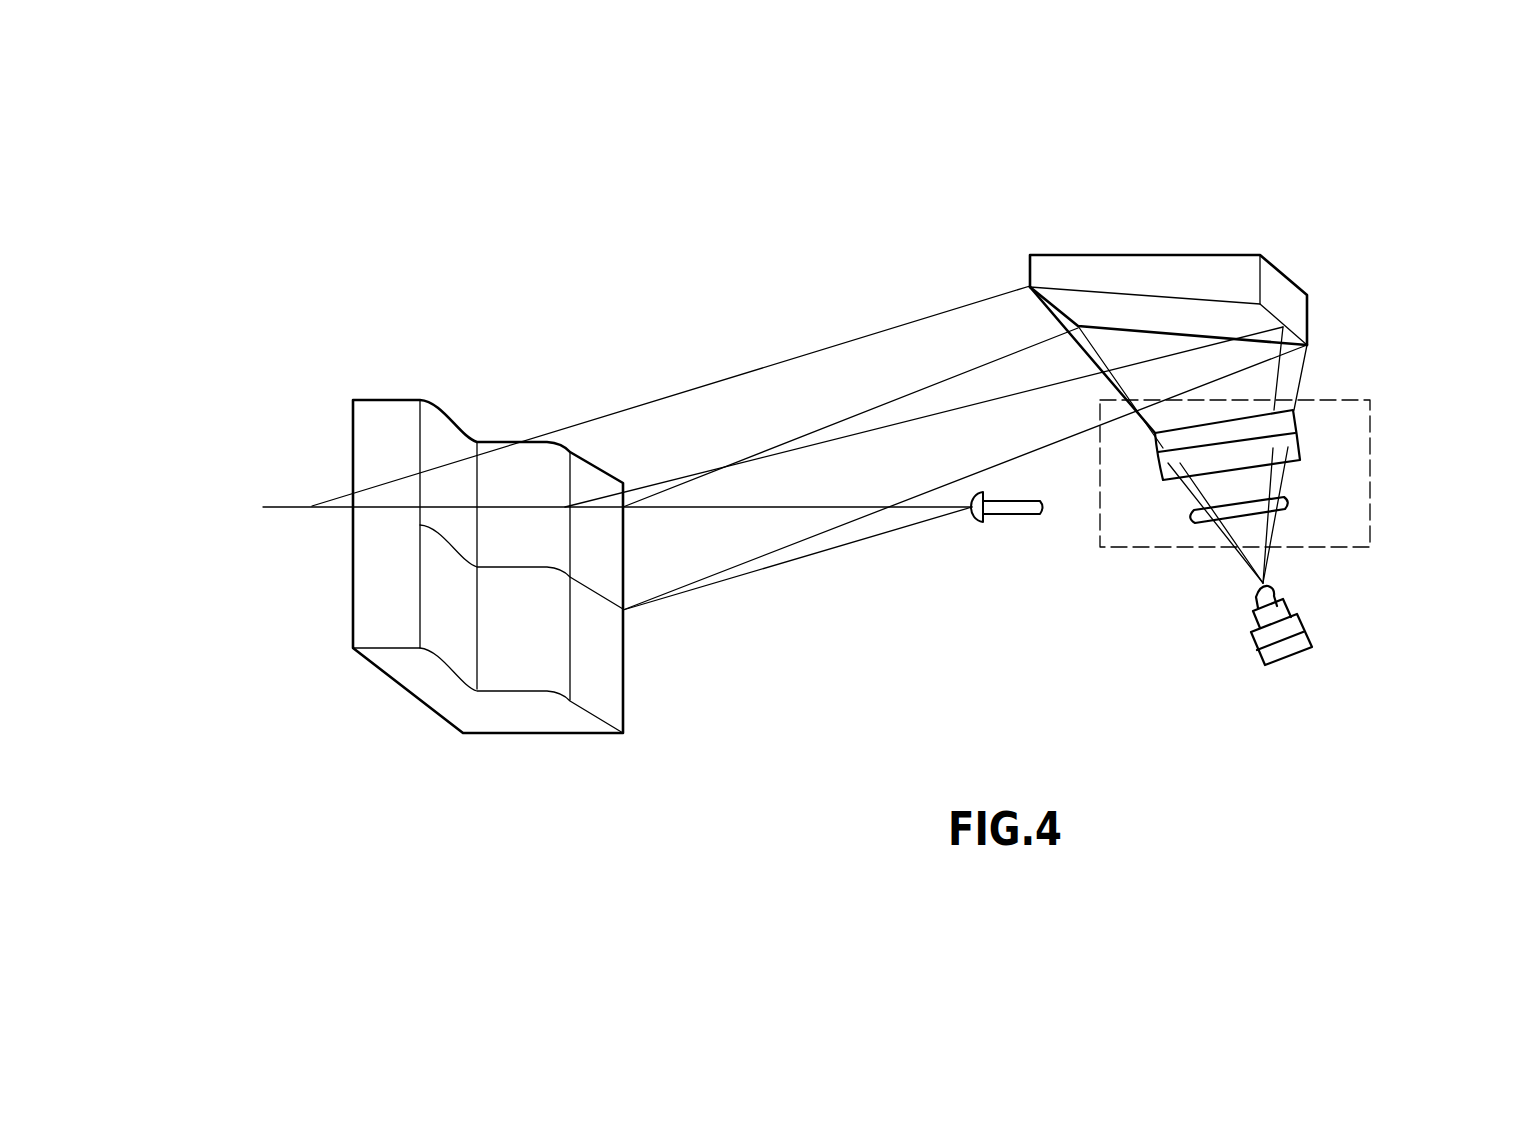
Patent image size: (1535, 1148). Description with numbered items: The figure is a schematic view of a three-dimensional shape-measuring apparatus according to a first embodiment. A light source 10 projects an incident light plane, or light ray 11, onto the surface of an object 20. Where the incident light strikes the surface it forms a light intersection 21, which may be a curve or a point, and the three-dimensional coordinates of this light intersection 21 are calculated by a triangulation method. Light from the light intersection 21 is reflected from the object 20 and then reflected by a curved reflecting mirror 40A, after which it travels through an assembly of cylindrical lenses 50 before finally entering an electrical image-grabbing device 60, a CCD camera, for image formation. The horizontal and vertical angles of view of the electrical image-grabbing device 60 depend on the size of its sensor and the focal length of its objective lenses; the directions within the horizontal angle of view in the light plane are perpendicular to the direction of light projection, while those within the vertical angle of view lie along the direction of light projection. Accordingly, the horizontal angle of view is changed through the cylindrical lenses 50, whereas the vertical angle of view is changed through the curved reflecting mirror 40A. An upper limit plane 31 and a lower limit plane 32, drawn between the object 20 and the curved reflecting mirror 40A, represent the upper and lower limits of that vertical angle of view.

The light source 10 is at (1022, 511).
The light beam from source 11 is at (892, 523).
The object 20 is at (403, 562).
The light intersection 21 is at (597, 600).
The upper limit plane 31 is at (782, 377).
The lower limit plane 32 is at (1010, 442).
The curved reflecting mirror 40A is at (1217, 267).
The assembly of cylindrical lenses 50 is at (1322, 488).
The electrical image-grabbing device 60 is at (1305, 640).